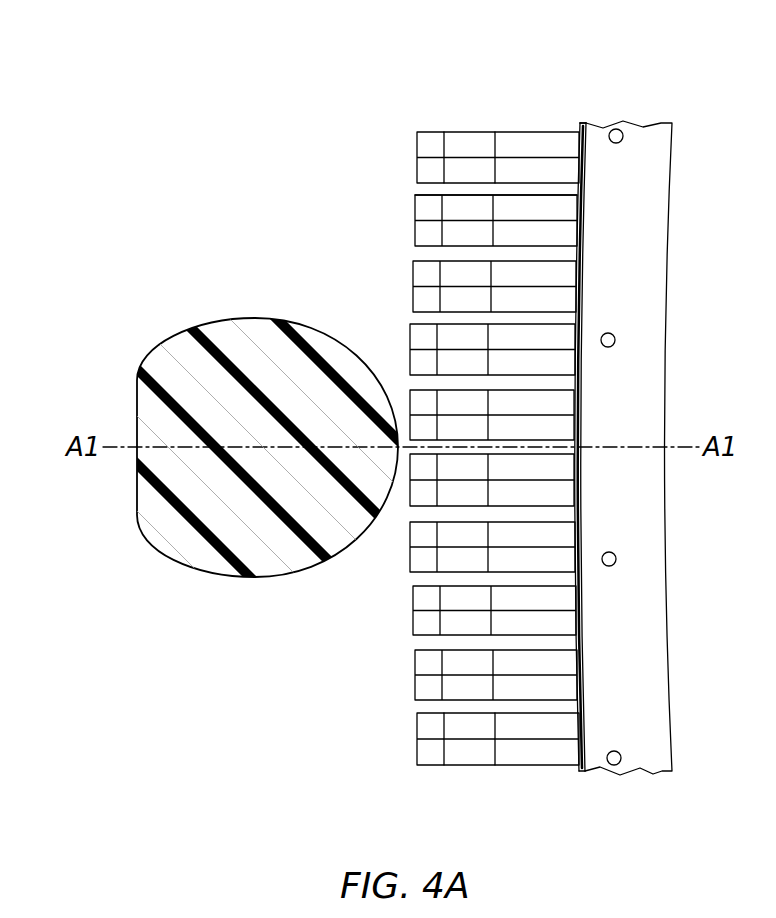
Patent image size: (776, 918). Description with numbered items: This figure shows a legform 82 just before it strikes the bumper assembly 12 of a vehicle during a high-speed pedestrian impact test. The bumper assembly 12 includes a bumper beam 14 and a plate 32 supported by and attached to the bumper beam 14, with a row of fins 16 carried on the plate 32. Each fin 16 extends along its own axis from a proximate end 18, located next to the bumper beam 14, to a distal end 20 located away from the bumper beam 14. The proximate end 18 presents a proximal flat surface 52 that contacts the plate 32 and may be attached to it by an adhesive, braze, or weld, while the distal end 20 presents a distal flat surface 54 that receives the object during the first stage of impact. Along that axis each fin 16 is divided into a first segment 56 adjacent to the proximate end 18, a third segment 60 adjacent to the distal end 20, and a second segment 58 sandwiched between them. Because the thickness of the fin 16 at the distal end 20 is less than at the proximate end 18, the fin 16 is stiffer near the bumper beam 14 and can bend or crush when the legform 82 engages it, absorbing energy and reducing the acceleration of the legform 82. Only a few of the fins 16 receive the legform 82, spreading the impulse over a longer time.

The bumper assembly 12 is at (652, 70).
The bumper beam 14 is at (676, 167).
The fin 16 is at (566, 170).
The proximate end 18 is at (579, 272).
The distal end 20 is at (414, 230).
The plate 32 is at (590, 148).
The proximal flat surface 52 is at (578, 303).
The distal flat surface 54 is at (414, 202).
The first segment 56 is at (533, 130).
The second segment 58 is at (468, 130).
The third segment 60 is at (430, 130).
The legform 82 is at (208, 322).